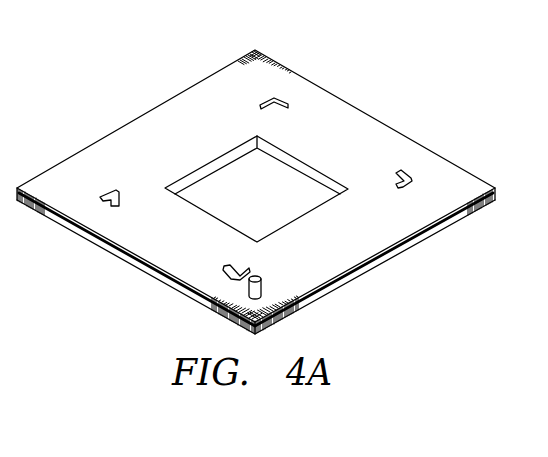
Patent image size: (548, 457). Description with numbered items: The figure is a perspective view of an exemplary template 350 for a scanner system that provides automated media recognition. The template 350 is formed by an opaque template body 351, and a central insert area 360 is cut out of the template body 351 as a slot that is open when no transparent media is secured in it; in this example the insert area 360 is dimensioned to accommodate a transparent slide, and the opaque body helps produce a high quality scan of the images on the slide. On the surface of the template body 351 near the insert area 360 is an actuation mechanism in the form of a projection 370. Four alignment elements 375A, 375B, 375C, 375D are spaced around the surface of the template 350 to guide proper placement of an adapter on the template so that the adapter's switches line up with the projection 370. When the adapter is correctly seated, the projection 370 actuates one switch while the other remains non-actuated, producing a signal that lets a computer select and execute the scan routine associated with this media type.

The template 350 is at (256, 170).
The template body 351 is at (371, 119).
The insert area 360 is at (298, 175).
The projection 370 is at (264, 276).
The alignment element 375A is at (116, 192).
The alignment element 375B is at (225, 270).
The alignment element 375C is at (407, 173).
The alignment element 375D is at (282, 99).